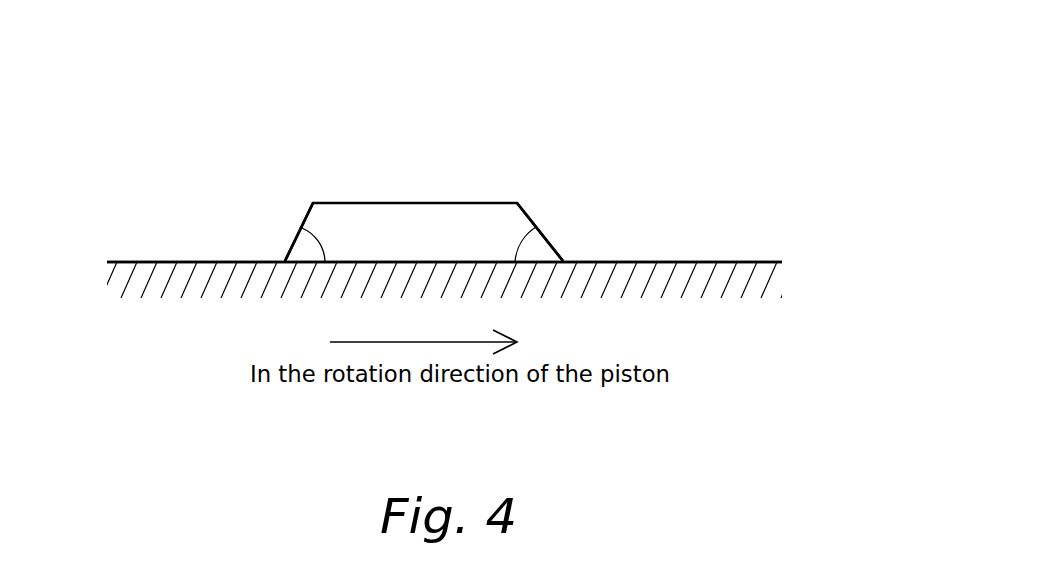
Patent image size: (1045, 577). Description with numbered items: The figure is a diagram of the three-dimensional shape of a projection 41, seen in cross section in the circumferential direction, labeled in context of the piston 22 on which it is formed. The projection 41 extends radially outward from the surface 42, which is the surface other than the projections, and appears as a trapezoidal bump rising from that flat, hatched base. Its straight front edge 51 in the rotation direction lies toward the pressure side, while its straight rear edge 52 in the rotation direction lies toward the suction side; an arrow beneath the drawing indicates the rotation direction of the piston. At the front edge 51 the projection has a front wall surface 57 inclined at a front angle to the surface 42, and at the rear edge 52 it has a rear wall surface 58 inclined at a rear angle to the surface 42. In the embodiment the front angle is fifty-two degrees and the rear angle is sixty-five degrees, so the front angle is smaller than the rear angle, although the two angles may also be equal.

The piston 22 is at (687, 117).
The projection 41 is at (392, 173).
The surface 42 is at (750, 260).
The front edge 51 is at (588, 192).
The rear edge 52 is at (238, 198).
The front wall surface 57 is at (524, 212).
The rear wall surface 58 is at (302, 226).